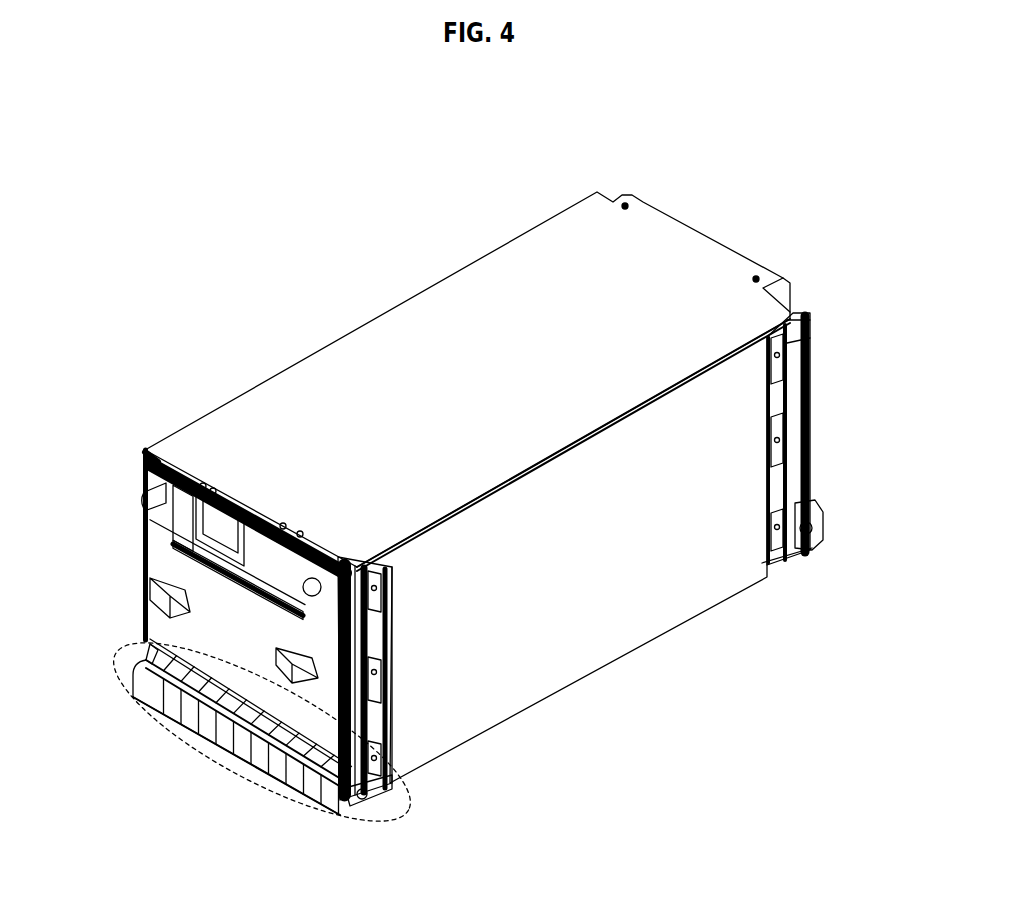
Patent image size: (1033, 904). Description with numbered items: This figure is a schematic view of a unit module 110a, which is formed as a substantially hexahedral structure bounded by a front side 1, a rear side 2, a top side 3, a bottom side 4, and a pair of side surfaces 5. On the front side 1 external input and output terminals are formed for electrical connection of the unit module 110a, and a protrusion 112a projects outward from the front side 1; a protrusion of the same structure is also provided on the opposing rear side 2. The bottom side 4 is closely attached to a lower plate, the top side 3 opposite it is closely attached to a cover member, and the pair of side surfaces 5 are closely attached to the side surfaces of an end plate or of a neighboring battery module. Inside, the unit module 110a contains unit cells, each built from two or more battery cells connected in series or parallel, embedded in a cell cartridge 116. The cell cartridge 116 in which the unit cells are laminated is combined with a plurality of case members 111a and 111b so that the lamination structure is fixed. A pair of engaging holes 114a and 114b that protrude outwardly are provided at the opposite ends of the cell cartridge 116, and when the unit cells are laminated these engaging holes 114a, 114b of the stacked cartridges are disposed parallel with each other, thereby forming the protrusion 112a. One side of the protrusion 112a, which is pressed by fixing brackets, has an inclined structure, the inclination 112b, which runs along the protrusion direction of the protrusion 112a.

The unit module 110a is at (150, 272).
The case member 111a is at (328, 396).
The case member 111b is at (665, 617).
The protrusion 112a is at (183, 743).
The inclination 112b is at (147, 680).
The engaging hole 114a is at (240, 748).
The engaging hole 114b is at (808, 503).
The cell cartridge 116 is at (383, 797).
The front side 1 is at (224, 639).
The rear side 2 is at (806, 298).
The top side 3 is at (452, 327).
The bottom side 4 is at (561, 715).
The side surfaces 5 is at (637, 577).